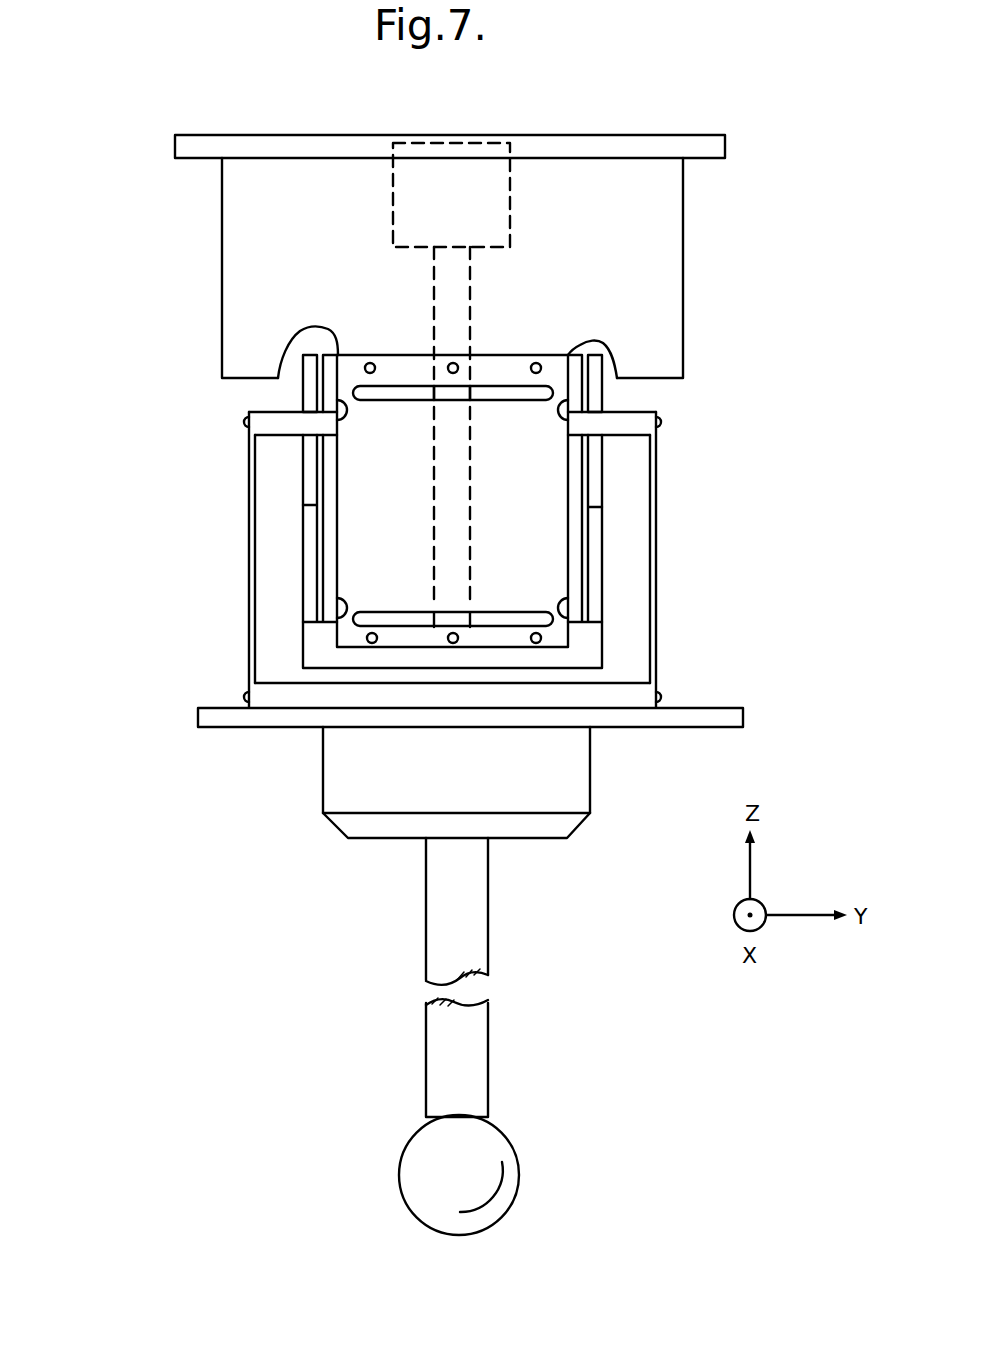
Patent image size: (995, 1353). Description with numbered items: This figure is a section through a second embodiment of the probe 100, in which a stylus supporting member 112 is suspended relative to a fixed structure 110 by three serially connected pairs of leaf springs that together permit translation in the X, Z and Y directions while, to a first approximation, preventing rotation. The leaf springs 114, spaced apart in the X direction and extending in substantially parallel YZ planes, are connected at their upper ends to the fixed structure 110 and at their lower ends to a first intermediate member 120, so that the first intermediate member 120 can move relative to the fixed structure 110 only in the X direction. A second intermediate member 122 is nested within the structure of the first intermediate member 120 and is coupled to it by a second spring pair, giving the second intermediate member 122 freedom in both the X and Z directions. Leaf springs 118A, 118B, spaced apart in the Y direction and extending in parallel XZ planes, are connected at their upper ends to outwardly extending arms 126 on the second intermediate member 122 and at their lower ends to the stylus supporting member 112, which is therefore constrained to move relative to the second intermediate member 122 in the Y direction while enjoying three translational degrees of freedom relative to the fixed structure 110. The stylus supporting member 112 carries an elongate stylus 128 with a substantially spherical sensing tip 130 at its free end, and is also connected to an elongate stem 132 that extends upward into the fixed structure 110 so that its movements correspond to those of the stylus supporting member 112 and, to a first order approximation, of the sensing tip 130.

The probe 100 is at (138, 311).
The fixed structure 110 is at (677, 320).
The stylus supporting member 112 is at (578, 768).
The leaf springs 114 is at (343, 553).
The leaf spring 118A is at (250, 622).
The leaf spring 118B is at (650, 560).
The first intermediate member 120 is at (597, 609).
The second intermediate member 122 is at (577, 505).
The outwardly extending arms 126 is at (273, 432).
The stylus 128 is at (480, 1052).
The sensing tip 130 is at (410, 1153).
The stem 132 is at (440, 497).